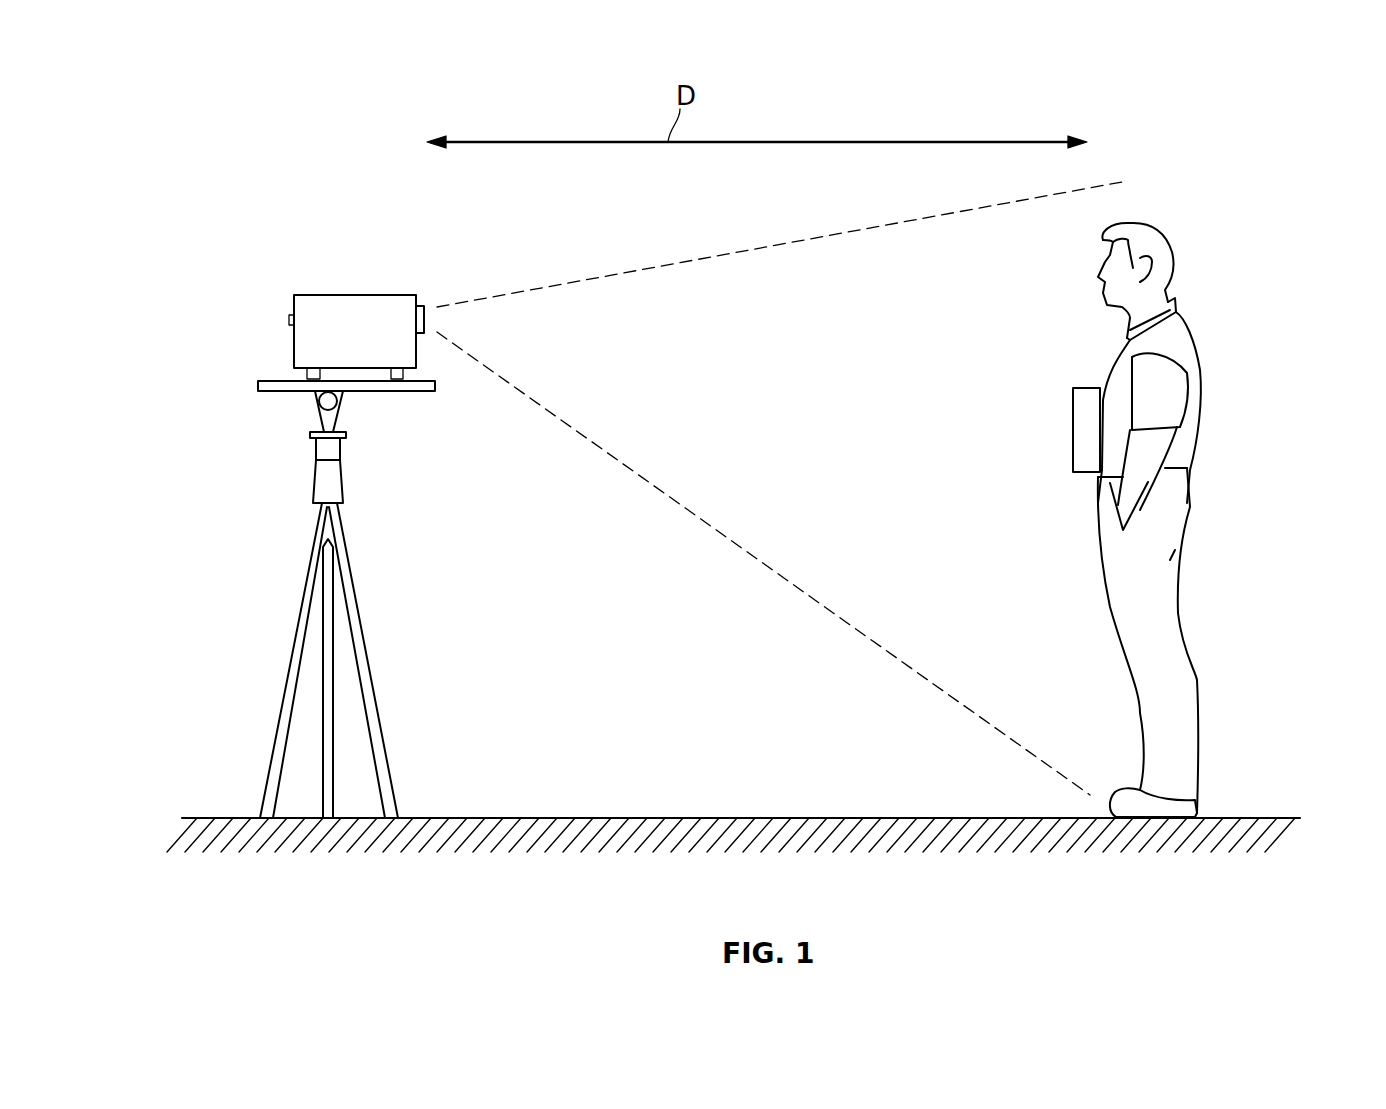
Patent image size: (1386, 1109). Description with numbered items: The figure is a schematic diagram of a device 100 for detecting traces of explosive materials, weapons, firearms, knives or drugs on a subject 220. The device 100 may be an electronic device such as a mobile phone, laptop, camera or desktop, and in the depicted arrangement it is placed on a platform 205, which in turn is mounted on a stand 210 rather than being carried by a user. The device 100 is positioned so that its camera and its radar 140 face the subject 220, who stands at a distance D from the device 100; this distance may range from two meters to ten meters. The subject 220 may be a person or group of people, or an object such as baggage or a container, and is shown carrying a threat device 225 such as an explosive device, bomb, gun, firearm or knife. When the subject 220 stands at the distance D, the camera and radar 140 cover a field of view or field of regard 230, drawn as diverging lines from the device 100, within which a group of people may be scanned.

The device 100 is at (325, 312).
The radar 140 is at (422, 303).
The platform 205 is at (272, 392).
The stand 210 is at (368, 662).
The subject 220 is at (1200, 360).
The threat device 225 is at (1073, 430).
The field of view or field of regard 230 is at (683, 262).